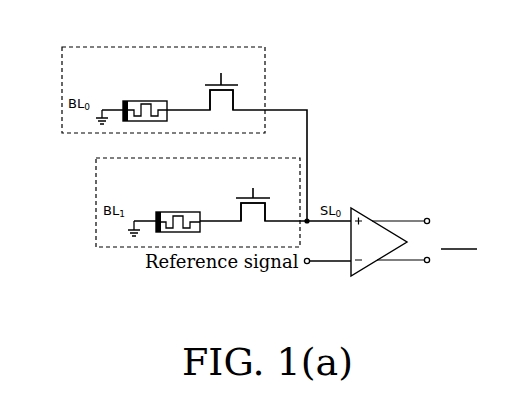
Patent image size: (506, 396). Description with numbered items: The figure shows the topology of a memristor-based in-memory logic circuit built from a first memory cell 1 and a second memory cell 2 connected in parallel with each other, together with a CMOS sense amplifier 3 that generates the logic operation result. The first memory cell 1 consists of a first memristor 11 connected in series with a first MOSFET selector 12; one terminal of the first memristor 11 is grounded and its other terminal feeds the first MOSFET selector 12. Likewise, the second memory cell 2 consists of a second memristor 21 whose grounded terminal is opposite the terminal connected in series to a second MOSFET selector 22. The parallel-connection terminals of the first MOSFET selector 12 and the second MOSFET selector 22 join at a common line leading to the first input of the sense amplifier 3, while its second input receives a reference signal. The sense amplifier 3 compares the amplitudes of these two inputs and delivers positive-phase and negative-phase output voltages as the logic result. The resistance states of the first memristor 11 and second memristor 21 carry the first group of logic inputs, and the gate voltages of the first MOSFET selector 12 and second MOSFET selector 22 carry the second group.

The first memory cell 1 is at (62, 46).
The second memory cell 2 is at (96, 247).
The sense amplifier 3 is at (364, 210).
The first memristor 11 is at (123, 102).
The first MOSFET selector 12 is at (236, 103).
The second memristor 21 is at (155, 212).
The second MOSFET selector 22 is at (240, 211).